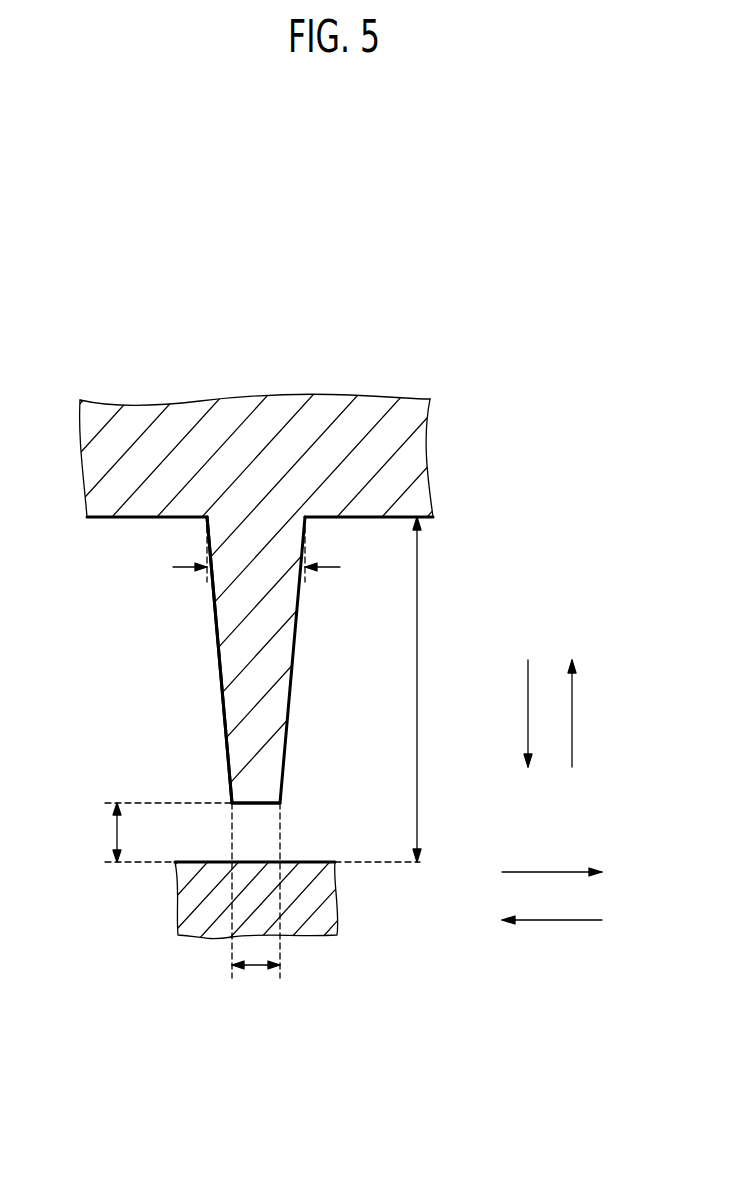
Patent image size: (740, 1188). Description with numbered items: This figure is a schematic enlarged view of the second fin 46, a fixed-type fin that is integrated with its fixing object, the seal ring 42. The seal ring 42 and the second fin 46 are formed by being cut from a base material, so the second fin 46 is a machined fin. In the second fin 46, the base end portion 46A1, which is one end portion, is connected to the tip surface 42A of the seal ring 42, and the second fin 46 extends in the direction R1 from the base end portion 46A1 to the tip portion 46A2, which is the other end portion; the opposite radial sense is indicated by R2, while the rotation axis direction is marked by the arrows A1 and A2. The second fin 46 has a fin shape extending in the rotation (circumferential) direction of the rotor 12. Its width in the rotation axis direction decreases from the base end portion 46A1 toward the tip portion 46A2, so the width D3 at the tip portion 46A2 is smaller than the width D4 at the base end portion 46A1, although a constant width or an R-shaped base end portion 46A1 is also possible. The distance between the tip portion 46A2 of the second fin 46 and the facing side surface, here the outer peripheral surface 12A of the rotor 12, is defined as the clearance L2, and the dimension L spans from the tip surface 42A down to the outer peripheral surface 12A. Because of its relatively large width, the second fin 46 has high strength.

The seal ring 42 is at (412, 451).
The tip surface of the seal ring 42A is at (377, 518).
The second fin 46 is at (302, 666).
The base end portion 46A1 is at (226, 521).
The tip portion 46A2 is at (262, 814).
The rotor 12 is at (305, 895).
The outer peripheral surface of the rotor 12A is at (337, 862).
The width in the base end portion D4 is at (252, 568).
The width in the tip portion D3 is at (256, 968).
The distance from surface 42A to surface 12A L is at (421, 690).
The clearance L2 is at (113, 829).
The direction R1 is at (542, 713).
The radial direction R2 is at (587, 713).
The axial direction A1 is at (568, 875).
The axial direction A2 is at (569, 925).